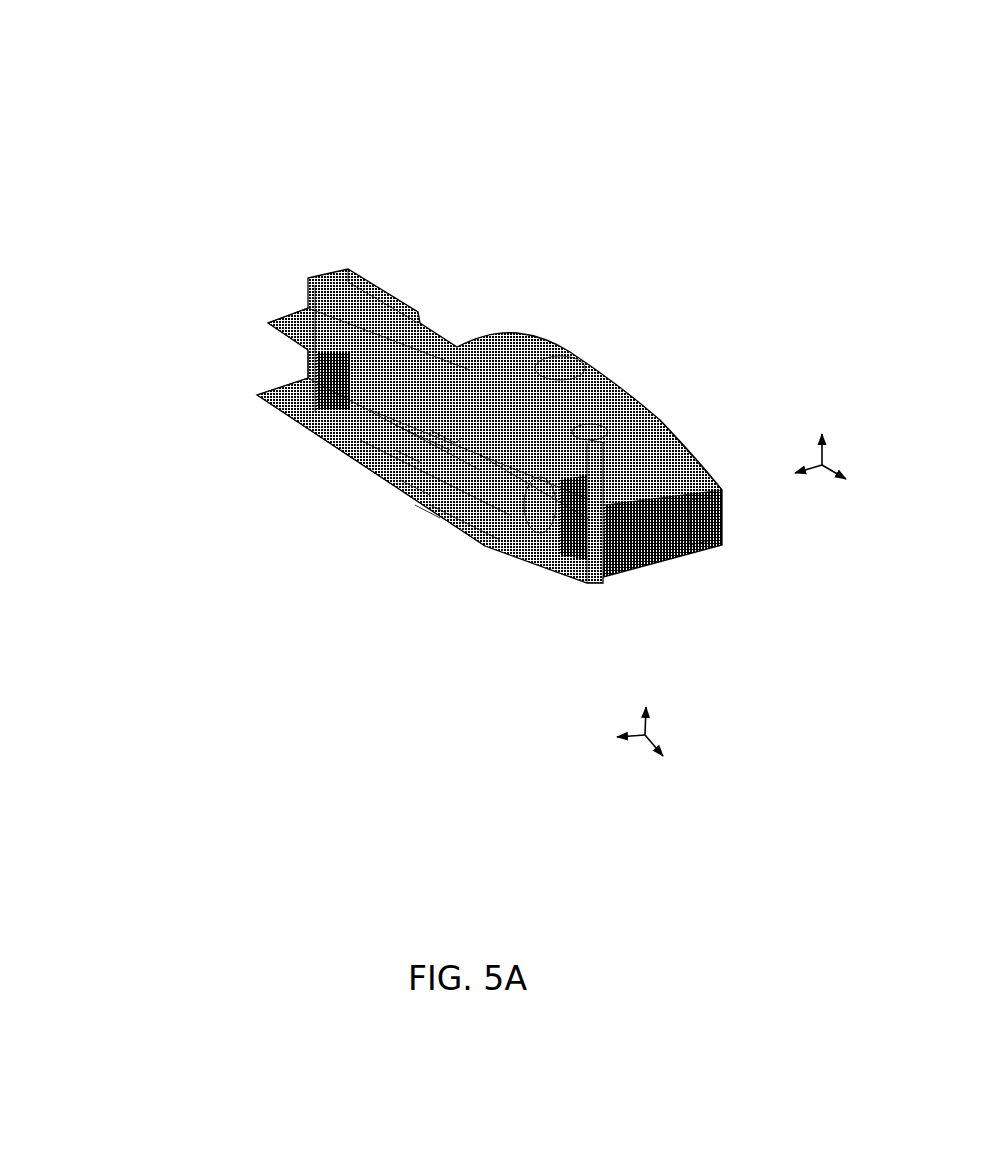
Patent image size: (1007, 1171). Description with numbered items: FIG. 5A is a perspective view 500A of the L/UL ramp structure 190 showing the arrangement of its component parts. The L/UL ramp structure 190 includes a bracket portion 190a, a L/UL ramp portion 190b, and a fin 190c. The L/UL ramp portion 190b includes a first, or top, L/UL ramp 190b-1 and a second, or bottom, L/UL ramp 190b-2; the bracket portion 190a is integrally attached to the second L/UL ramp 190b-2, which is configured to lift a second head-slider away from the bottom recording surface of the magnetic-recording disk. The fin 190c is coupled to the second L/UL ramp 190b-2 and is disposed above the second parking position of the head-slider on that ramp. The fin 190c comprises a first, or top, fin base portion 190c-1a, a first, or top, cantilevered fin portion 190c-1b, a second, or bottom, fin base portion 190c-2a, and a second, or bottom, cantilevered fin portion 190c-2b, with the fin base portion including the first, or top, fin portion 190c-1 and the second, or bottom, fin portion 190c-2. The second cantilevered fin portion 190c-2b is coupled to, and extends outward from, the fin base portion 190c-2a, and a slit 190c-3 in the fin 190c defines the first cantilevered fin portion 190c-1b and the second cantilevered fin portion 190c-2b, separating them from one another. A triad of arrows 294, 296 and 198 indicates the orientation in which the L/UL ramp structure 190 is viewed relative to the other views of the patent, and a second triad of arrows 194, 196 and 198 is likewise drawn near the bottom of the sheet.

The perspective view 500A is at (118, 72).
The L/UL ramp structure 190 is at (567, 221).
The bracket portion 190a is at (603, 385).
The L/UL ramp portion 190b is at (117, 321).
The first L/UL ramp 190b-1 is at (279, 323).
The second L/UL ramp 190b-2 is at (272, 411).
The fin 190c is at (145, 673).
The first fin portion 190c-1 is at (250, 456).
The first fin base portion 190c-1a is at (445, 436).
The first cantilevered fin portion 190c-1b is at (406, 459).
The slit 190c-3 is at (405, 486).
The second fin portion 190c-2 is at (250, 582).
The second cantilevered fin portion 190c-2b is at (421, 514).
The second fin base portion 190c-2a is at (494, 514).
The arrow 198 is at (820, 448).
The arrow 296 is at (828, 465).
The arrow 294 is at (812, 468).
The Y axis direction 196 is at (650, 737).
The X axis direction 194 is at (633, 738).